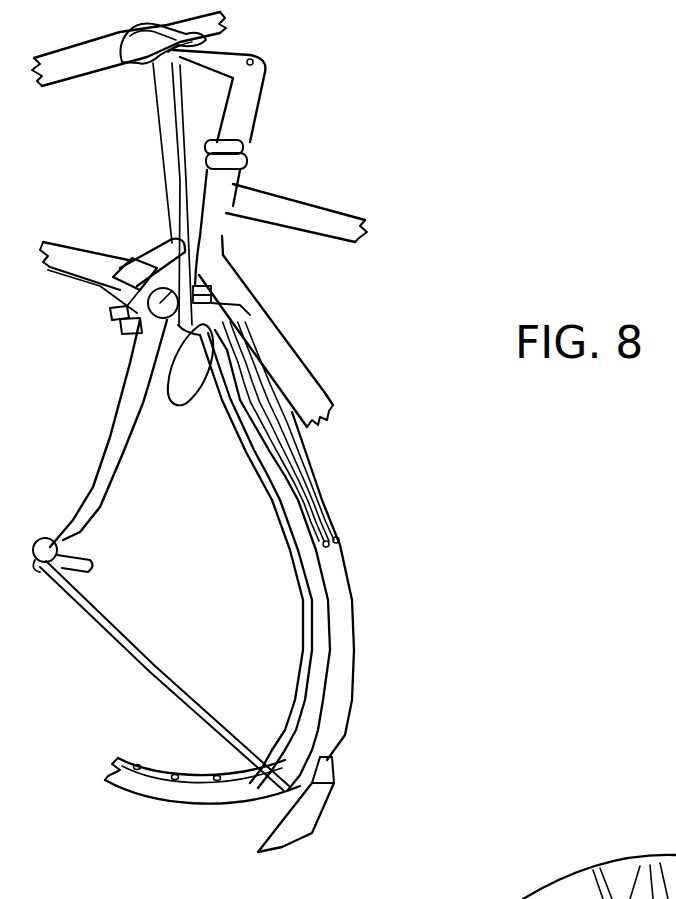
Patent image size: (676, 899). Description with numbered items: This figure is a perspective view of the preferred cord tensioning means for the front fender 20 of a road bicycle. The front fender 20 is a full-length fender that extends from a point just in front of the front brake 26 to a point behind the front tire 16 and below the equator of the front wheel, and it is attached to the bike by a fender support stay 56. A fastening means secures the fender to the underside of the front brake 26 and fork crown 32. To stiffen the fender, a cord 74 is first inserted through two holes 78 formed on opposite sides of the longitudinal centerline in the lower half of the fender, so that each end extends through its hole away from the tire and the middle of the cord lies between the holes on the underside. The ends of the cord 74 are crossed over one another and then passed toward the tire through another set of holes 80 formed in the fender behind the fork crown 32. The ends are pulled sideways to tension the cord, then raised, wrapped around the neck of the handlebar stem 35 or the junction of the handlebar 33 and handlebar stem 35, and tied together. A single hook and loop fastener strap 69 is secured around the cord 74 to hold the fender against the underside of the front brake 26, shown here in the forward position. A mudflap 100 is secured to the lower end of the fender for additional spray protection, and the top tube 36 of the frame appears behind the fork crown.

The front tire 16 is at (247, 793).
The front fender 20 is at (340, 653).
The front brake 26 is at (112, 320).
The fork crown 32 is at (133, 326).
The handlebar 33 is at (102, 50).
The handlebar stem 35 is at (243, 97).
The top tube 36 is at (300, 212).
The fender support stay 56 is at (150, 665).
The hook and loop fastener strap 69 is at (163, 260).
The cord 74 is at (310, 482).
The holes 78 is at (330, 547).
The holes 80 is at (186, 386).
The mudflap 100 is at (310, 815).